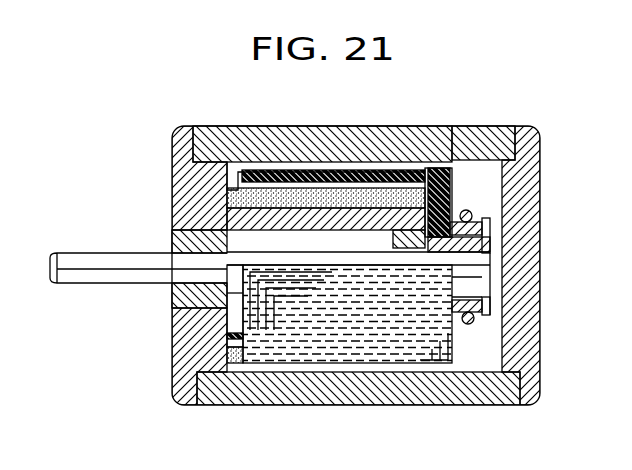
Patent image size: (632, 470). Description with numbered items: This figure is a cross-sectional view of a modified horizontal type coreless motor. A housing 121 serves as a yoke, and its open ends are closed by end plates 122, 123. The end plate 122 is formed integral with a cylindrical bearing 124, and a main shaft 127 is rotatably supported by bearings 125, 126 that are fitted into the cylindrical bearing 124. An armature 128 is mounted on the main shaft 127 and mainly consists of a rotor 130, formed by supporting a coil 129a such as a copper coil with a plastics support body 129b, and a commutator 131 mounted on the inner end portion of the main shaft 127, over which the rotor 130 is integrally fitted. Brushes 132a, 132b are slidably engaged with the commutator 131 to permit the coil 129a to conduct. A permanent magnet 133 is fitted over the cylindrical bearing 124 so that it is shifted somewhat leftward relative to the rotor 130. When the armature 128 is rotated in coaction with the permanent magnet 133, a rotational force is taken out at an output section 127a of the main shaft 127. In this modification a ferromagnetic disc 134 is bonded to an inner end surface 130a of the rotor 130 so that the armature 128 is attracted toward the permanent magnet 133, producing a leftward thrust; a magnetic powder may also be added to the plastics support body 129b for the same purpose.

The housing 121 is at (343, 133).
The end plate 122 is at (178, 324).
The end plate 123 is at (534, 273).
The cylindrical bearing 124 is at (326, 216).
The bearing 125 is at (174, 243).
The bearing 126 is at (393, 238).
The main shaft 127 is at (270, 266).
The output section 127a is at (113, 263).
The armature 128 is at (472, 340).
The coil 129a is at (328, 352).
The plastics support body 129b is at (282, 176).
The rotor 130 is at (240, 355).
The inner end surface of rotor 130a is at (462, 119).
The commutator 131 is at (490, 238).
The brush 132a is at (468, 210).
The brush 132b is at (475, 322).
The permanent magnet 133 is at (224, 163).
The ferromagnetic disc 134 is at (447, 193).